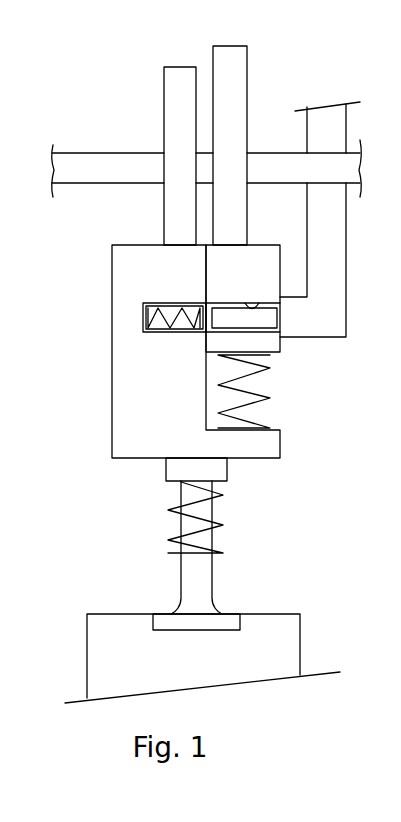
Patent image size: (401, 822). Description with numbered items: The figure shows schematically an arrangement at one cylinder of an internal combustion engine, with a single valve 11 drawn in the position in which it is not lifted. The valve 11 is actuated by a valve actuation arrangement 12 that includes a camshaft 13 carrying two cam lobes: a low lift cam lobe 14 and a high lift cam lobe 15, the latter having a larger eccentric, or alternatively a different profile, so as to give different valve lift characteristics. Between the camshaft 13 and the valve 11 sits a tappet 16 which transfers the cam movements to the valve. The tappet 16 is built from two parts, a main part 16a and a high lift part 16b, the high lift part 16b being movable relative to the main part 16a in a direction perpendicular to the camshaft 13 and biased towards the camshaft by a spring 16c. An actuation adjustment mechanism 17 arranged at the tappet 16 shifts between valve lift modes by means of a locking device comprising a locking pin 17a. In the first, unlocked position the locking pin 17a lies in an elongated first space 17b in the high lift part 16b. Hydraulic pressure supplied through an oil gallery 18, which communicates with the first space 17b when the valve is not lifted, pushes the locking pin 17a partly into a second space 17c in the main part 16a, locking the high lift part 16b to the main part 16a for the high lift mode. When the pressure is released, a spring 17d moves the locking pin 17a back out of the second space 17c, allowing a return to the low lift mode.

The valve 11 is at (190, 572).
The valve actuation arrangement 12 is at (319, 194).
The camshaft 13 is at (133, 163).
The low lift cam lobe 14 is at (175, 72).
The high lift cam lobe 15 is at (228, 52).
The tappet 16 is at (181, 360).
The main part 16a is at (120, 413).
The high lift part 16b is at (268, 256).
The spring 16c is at (260, 403).
The actuation adjustment mechanism 17 is at (194, 330).
The locking pin 17a is at (227, 317).
The first space 17b is at (240, 302).
The second space 17c is at (178, 330).
The spring 17d is at (152, 305).
The oil gallery 18 is at (337, 310).